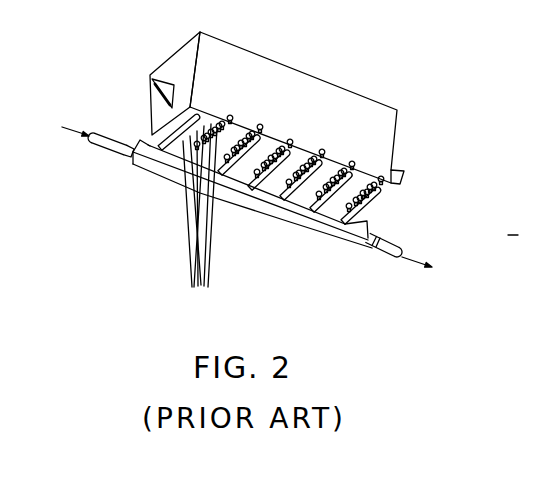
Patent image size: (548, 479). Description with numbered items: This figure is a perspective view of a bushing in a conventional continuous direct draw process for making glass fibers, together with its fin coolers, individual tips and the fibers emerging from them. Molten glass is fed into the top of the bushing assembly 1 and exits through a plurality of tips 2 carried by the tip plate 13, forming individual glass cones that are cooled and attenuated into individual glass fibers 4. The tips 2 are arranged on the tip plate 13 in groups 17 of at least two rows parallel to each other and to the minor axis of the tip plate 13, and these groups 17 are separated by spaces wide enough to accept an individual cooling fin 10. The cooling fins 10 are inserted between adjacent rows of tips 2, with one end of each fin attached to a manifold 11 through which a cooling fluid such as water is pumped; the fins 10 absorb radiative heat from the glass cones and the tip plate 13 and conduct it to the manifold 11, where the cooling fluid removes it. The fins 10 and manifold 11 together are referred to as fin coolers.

The bushing assembly 1 is at (353, 83).
The tips 2 is at (334, 170).
The glass fibers 4 is at (187, 226).
The cooling fins 10 is at (372, 207).
The manifold 11 is at (310, 234).
The tip plate 13 is at (180, 121).
The groups 17 is at (267, 150).